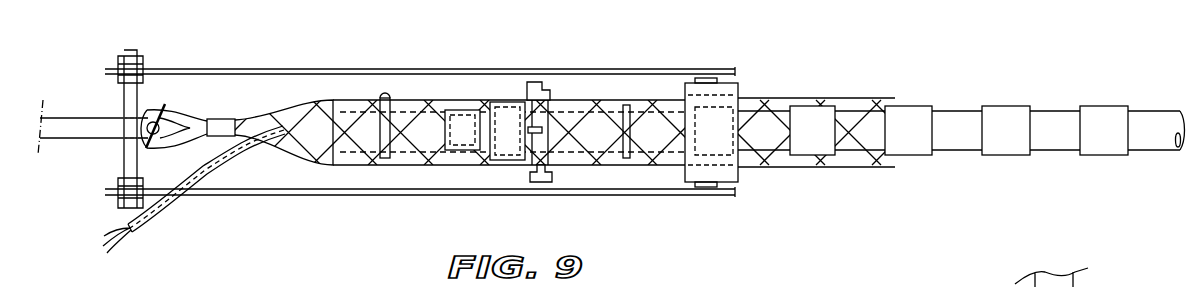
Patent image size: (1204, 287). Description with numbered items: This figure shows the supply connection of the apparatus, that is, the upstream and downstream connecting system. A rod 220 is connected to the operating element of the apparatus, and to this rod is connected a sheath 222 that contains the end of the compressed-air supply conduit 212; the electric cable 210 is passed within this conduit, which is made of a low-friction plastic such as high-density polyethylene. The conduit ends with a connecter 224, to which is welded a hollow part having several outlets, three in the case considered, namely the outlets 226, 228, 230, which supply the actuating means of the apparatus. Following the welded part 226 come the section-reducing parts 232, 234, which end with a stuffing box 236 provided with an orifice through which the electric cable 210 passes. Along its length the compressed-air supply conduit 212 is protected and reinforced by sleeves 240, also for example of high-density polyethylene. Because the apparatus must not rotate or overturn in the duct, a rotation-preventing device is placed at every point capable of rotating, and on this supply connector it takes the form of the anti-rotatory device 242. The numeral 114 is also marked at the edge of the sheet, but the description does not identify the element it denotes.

The electric cable 210 is at (190, 200).
The compressed-air supply conduit 212 is at (953, 150).
The rod 220 is at (72, 118).
The sheath 222 is at (765, 97).
The connecter 224 is at (595, 118).
The outlet 226 is at (545, 82).
The outlet 228 is at (533, 133).
The outlet 230 is at (552, 178).
The section-reducing part 232 is at (510, 102).
The section-reducing part 234 is at (457, 125).
The stuffing box 236 is at (408, 143).
The sleeve 240 is at (1010, 115).
The anti-rotatory device 242 is at (293, 195).
The element 114 is at (827, 278).